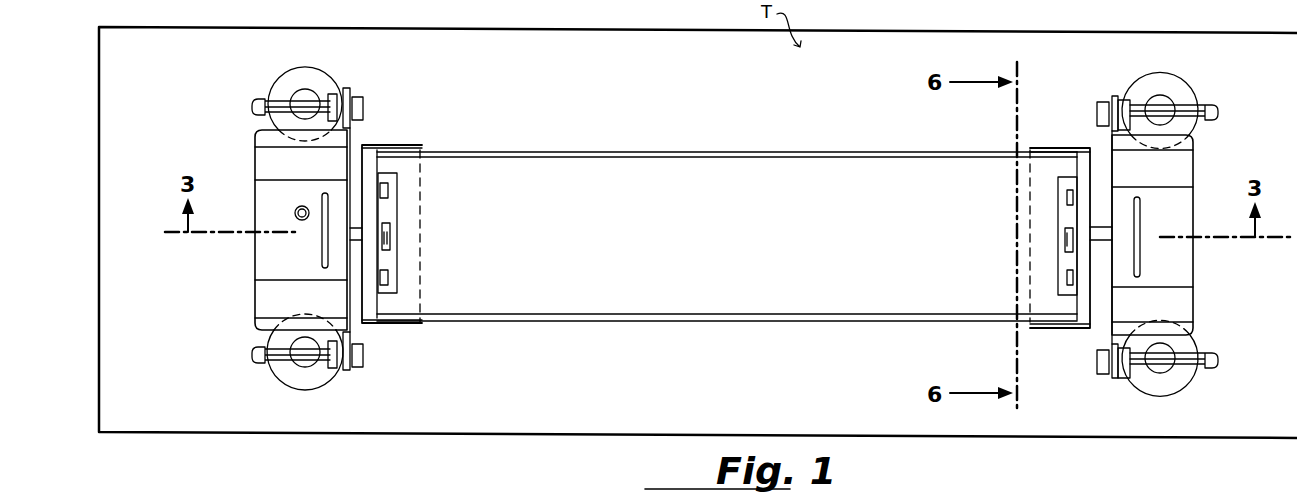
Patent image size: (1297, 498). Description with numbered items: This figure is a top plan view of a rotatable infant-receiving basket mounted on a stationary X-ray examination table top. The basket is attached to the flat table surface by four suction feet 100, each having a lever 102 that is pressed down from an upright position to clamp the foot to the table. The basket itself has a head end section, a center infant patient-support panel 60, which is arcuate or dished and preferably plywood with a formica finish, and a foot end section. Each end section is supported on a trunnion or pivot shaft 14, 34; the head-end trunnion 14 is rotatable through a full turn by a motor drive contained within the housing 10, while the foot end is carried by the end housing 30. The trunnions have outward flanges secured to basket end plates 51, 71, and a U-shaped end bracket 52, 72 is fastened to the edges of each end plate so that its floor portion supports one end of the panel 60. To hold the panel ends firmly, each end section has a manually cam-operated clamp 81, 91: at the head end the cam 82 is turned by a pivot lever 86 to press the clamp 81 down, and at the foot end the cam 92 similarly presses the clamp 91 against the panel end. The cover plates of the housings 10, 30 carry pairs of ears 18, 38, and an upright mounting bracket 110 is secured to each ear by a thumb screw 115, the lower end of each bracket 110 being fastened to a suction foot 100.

The housing 10 is at (243, 289).
The trunnion or pivot shaft 14 is at (350, 228).
The ears 18 is at (352, 92).
The end housing 30 is at (1206, 270).
The trunnion or pivot shaft 34 is at (1098, 234).
The ears 38 is at (1116, 100).
The basket end plate 51 is at (372, 306).
The U-shaped end bracket 52 is at (395, 145).
The center infant patient-support panel 60 is at (660, 153).
The basket end plate 71 is at (1082, 266).
The U-shaped end bracket 72 is at (1058, 148).
The clamp 81 is at (395, 203).
The cam 82 is at (393, 228).
The pivot lever 86 is at (394, 247).
The clamp 91 is at (1065, 202).
The cam 92 is at (1068, 242).
The suction feet 100 is at (344, 70).
The levers 102 is at (250, 104).
The upright mounting bracket 110 is at (1128, 100).
The thumb screw 115 is at (1097, 110).